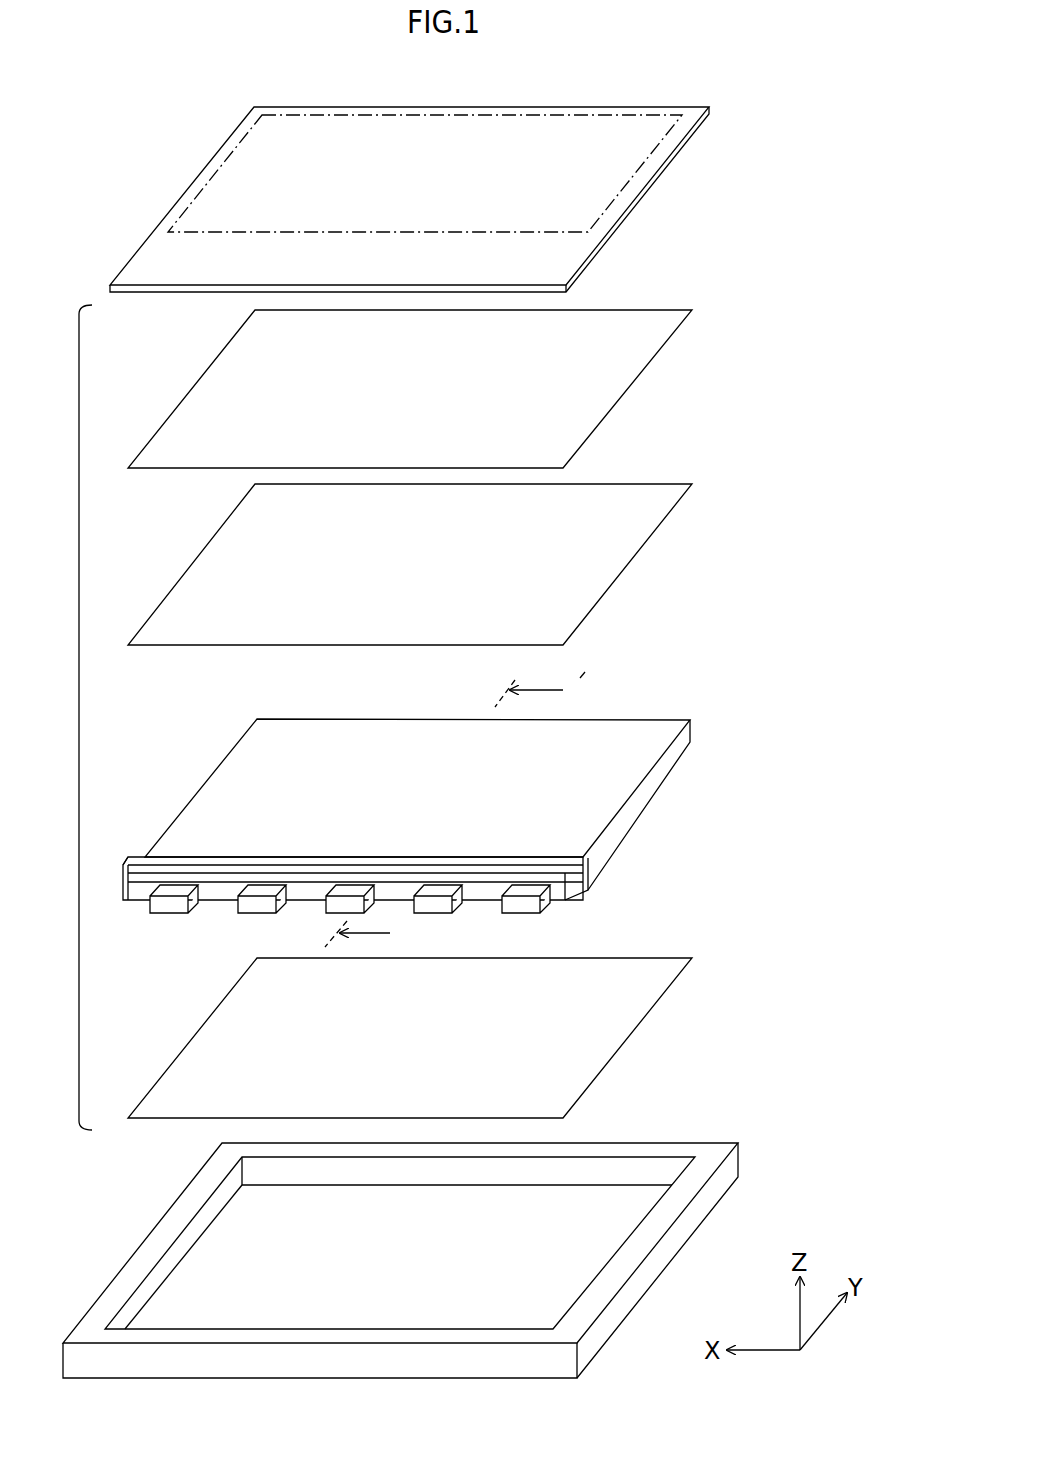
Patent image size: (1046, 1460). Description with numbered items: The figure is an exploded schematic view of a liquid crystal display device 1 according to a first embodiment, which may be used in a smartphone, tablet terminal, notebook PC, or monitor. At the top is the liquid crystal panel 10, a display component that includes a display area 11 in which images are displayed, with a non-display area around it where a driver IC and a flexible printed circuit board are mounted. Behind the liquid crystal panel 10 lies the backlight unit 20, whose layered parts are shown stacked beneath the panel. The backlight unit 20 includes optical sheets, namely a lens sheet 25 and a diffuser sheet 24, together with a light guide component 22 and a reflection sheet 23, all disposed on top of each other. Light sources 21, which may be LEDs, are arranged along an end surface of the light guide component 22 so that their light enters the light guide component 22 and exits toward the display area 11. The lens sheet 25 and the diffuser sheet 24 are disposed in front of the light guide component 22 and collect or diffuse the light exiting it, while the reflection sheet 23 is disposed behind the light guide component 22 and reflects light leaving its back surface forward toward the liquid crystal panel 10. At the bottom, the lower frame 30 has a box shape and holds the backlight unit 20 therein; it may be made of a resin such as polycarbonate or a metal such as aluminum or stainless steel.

The liquid crystal display device 1 is at (745, 100).
The liquid crystal panel 10 is at (557, 260).
The display area 11 is at (237, 147).
The backlight unit 20 is at (79, 718).
The light sources 21 is at (253, 905).
The light guide component 22 is at (640, 718).
The reflection sheet 23 is at (618, 1012).
The diffuser sheet 24 is at (597, 565).
The lens sheet 25 is at (575, 405).
The lower frame 30 is at (673, 1142).